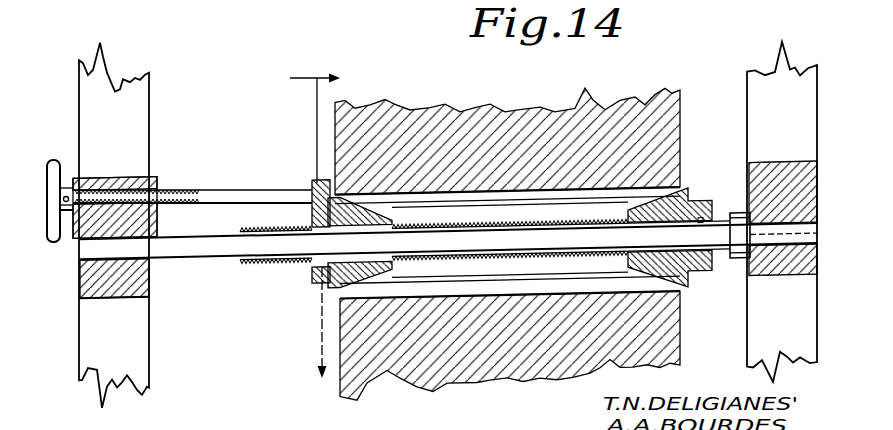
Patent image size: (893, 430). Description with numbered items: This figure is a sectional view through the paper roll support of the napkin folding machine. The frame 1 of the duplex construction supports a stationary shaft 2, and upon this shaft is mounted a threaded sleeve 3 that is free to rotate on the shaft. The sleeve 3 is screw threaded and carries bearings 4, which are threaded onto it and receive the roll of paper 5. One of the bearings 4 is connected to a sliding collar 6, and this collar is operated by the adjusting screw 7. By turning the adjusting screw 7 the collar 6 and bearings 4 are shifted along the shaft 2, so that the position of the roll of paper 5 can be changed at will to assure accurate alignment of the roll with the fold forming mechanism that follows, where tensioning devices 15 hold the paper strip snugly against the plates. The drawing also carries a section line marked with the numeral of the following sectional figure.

The frame 1 is at (127, 338).
The stationary shaft 2 is at (208, 247).
The threaded sleeve 3 is at (270, 262).
The bearings 4 is at (690, 196).
The roll of paper 5 is at (657, 104).
The sliding collar 6 is at (312, 180).
The adjusting screw 7 is at (185, 193).
The tensioning devices 15 is at (300, 81).